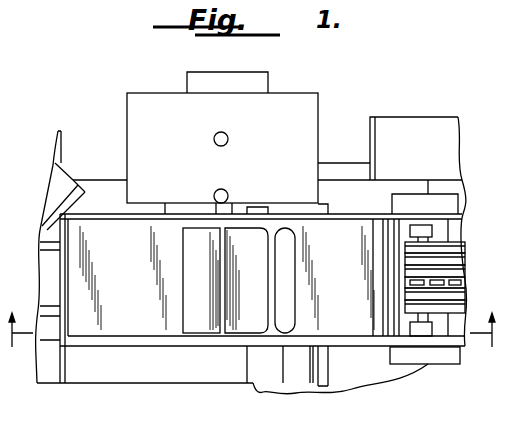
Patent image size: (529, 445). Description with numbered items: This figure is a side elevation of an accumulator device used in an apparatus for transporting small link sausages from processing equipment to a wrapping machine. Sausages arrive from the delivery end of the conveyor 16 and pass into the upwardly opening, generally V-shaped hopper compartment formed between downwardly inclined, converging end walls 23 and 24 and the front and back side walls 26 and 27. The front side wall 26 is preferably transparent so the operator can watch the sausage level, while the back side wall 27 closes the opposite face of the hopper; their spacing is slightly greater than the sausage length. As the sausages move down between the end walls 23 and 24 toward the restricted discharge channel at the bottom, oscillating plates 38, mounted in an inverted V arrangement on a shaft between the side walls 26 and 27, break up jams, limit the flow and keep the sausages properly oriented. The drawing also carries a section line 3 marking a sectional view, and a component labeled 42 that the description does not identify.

The housing block 42 is at (227, 143).
The back side wall 27 is at (354, 218).
The hopper end wall 23 is at (123, 278).
The hopper end wall 24 is at (338, 278).
The oscillating plates 38 is at (233, 328).
The front side wall 26 is at (356, 342).
The delivery end of the conveyor 16 is at (439, 373).
The section line 3- 3 is at (250, 321).